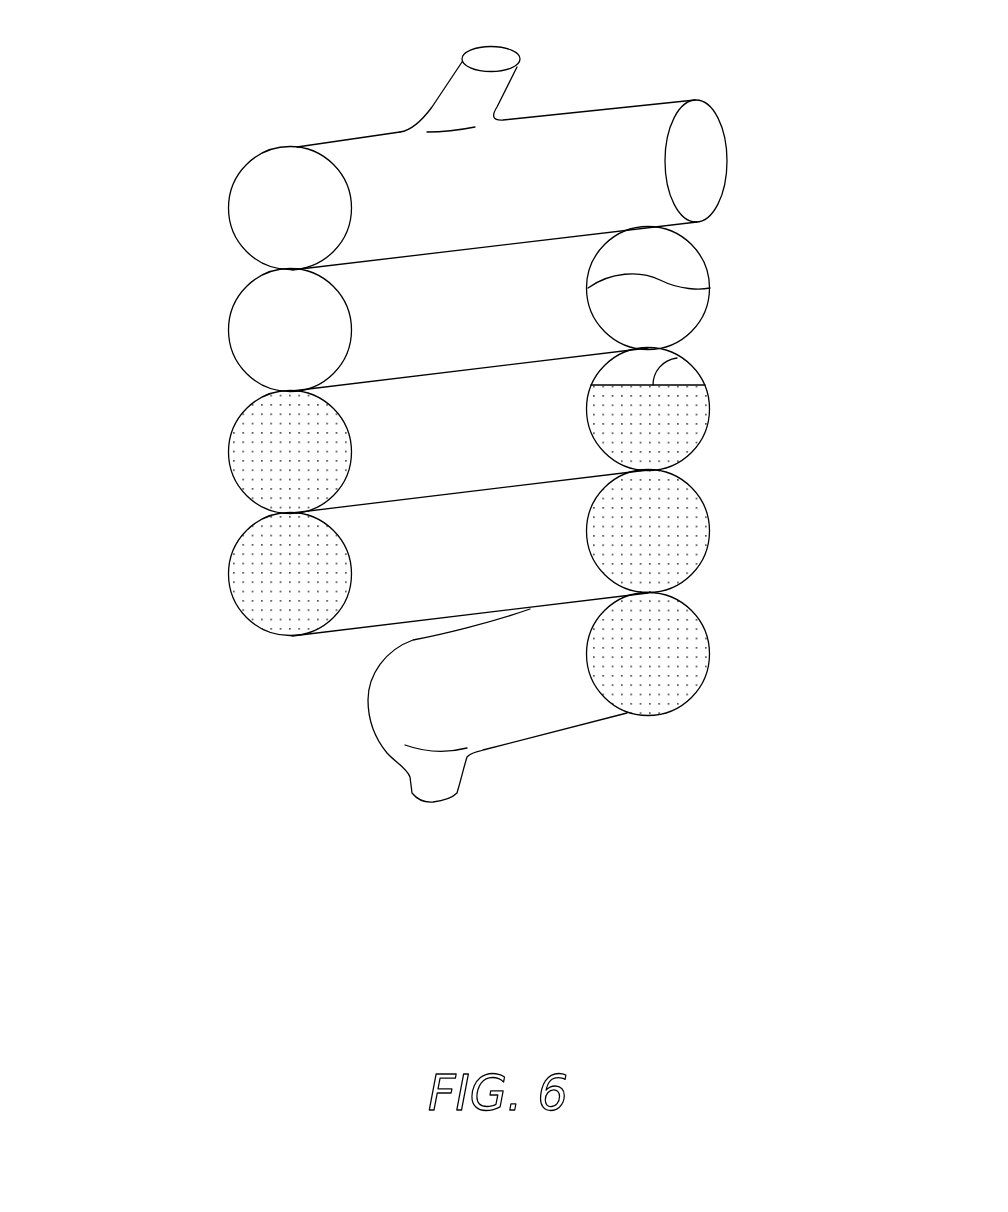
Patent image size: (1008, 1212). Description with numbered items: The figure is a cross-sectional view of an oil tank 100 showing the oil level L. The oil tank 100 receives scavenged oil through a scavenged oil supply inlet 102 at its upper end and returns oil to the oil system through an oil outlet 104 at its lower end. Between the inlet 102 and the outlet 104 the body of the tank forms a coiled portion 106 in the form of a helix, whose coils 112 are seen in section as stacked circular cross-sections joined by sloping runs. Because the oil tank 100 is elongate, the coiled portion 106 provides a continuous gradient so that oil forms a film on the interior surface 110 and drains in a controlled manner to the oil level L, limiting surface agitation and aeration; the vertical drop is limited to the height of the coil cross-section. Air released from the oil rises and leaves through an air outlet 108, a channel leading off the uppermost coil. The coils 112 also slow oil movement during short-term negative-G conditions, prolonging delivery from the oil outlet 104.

The oil tank 100 is at (162, 35).
The scavenged oil supply inlet 102 is at (727, 143).
The oil outlet 104 is at (460, 790).
The coiled portion 106 is at (748, 415).
The air outlet 108 is at (516, 72).
The surface 110 is at (710, 288).
The coils 112 is at (228, 204).
The oil level L is at (677, 358).